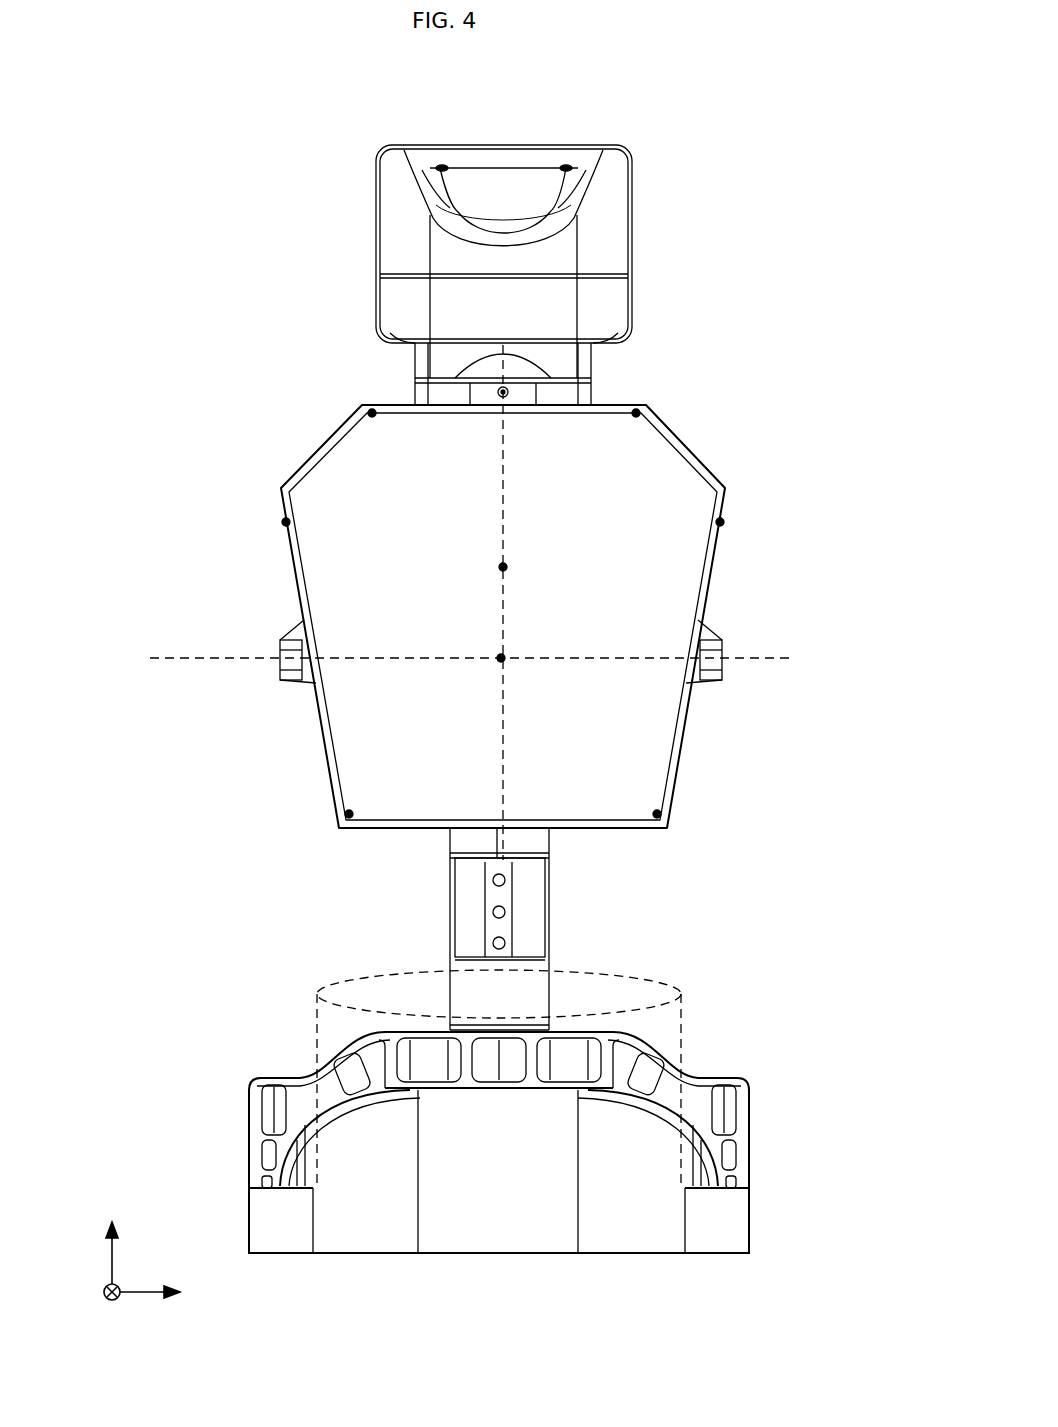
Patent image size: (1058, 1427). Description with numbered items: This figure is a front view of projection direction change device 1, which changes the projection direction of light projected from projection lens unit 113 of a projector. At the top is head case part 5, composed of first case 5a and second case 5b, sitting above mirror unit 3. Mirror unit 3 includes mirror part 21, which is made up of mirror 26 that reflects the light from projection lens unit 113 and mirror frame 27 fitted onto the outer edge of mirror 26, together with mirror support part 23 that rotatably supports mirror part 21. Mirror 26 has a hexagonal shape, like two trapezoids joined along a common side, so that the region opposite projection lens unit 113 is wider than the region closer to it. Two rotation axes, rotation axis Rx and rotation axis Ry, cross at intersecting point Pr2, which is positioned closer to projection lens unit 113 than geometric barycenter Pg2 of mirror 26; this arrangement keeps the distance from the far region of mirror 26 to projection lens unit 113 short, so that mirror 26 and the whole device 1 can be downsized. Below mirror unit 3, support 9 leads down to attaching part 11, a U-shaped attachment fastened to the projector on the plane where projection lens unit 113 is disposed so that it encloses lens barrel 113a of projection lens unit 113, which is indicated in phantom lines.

The projection direction change device 1 is at (512, 109).
The mirror unit 3 is at (300, 402).
The head case part 5 is at (297, 196).
The first case 5a is at (395, 248).
The second case 5b is at (395, 297).
The support 9 is at (530, 843).
The attaching part 11 is at (250, 1138).
The mirror part 21 is at (194, 497).
The mirror support part 23 is at (722, 676).
The mirror 26 is at (350, 458).
The mirror frame 27 is at (282, 505).
The lens barrel 113a is at (394, 1078).
The projection lens unit 113 is at (313, 1028).
The geometric barycenter Pg2 is at (503, 567).
The intersecting point Pr2 is at (501, 658).
The rotation axis Rx is at (173, 662).
The rotation axis Ry is at (505, 495).